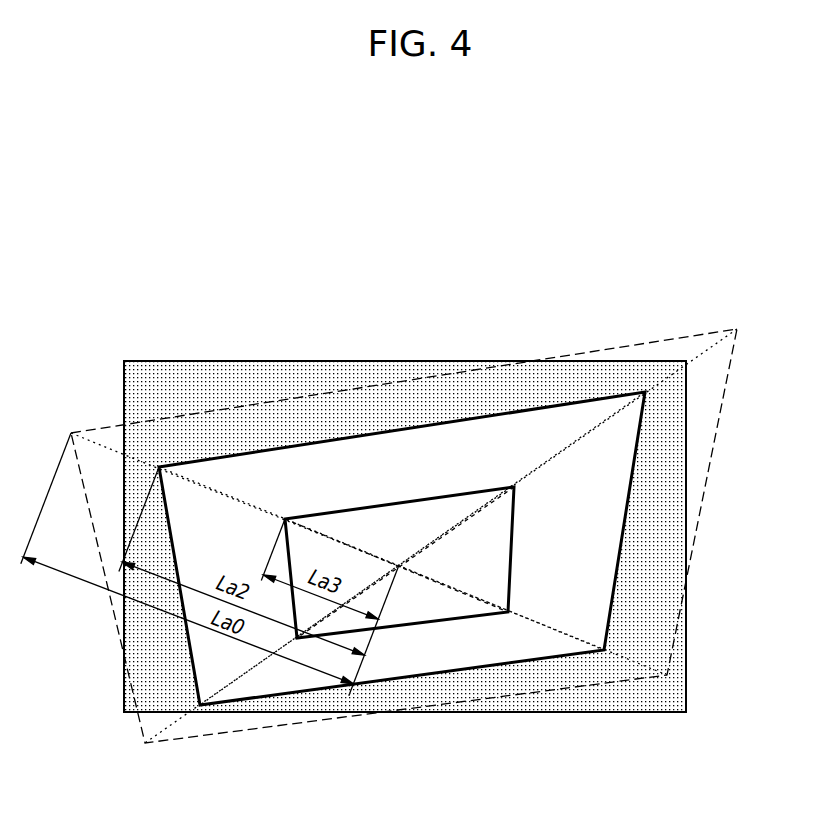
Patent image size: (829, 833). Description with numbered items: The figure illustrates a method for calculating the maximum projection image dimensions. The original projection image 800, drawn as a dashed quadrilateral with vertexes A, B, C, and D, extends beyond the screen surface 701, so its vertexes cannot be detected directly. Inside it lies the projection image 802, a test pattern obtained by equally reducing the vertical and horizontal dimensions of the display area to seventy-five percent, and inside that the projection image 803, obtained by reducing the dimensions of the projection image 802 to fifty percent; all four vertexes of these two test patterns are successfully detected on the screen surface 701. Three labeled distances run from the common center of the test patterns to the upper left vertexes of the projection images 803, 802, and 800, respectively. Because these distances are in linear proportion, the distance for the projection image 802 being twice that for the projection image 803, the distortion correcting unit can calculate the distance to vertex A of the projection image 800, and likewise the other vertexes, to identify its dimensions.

The screen surface 701 is at (377, 360).
The projection image 800 is at (601, 352).
The projection image 802 is at (209, 457).
The projection image 803 is at (397, 502).